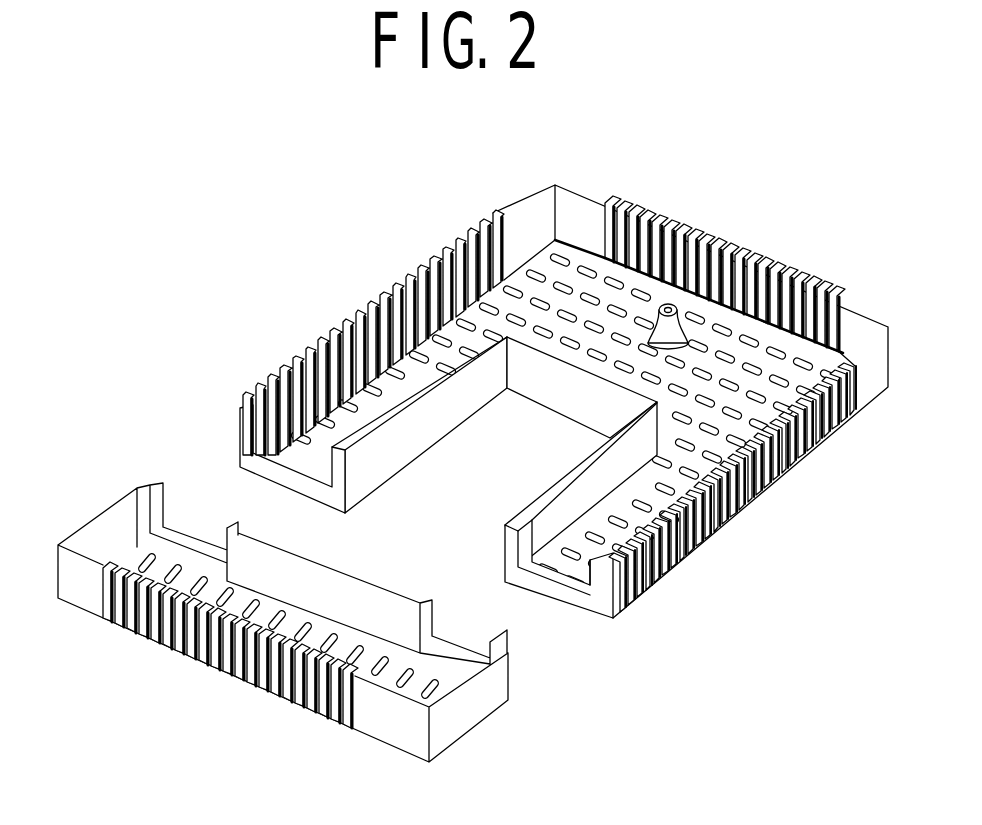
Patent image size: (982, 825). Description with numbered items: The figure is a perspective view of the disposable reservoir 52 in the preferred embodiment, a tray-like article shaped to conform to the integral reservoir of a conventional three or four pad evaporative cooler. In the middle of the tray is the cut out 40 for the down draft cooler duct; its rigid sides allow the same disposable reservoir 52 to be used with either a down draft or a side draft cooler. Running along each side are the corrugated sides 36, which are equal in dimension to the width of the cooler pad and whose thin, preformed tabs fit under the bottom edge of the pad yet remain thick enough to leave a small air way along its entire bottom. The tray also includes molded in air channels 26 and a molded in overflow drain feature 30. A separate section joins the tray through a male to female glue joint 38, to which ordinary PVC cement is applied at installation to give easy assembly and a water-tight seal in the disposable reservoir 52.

The molded in air channels 26 is at (773, 447).
The molded in overflow drain feature 30 is at (687, 303).
The corrugated sides 36 is at (407, 275).
The male to female glue joint 38 is at (455, 652).
The cut out for cooler duct 40 is at (458, 410).
The disposable reservoir 52 is at (543, 220).